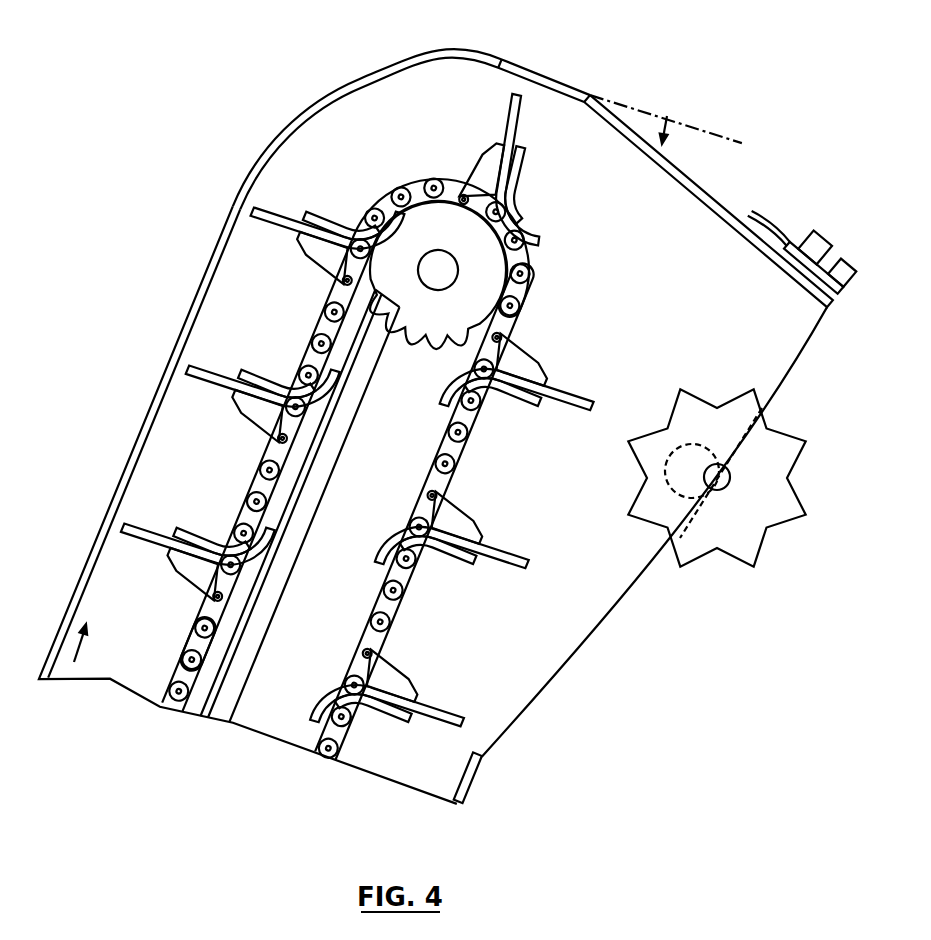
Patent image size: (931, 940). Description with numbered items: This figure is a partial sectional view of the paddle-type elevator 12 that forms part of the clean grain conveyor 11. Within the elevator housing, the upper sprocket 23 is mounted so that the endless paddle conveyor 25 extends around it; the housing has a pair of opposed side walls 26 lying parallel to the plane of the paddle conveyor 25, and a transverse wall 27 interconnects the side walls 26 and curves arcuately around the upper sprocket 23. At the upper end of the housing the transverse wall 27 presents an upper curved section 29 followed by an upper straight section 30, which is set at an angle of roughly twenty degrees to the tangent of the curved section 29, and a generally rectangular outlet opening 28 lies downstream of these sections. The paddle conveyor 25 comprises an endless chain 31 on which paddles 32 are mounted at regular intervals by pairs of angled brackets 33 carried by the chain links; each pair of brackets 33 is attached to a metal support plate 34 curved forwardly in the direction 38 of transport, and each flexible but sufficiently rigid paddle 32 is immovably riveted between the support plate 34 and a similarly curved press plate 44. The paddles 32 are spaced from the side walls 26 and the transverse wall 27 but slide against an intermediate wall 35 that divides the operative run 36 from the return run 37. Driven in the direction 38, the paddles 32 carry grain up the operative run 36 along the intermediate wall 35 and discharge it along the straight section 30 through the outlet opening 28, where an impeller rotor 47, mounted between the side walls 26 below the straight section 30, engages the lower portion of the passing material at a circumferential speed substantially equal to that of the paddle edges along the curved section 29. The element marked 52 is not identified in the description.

The clean grain conveyor 11 is at (212, 144).
The paddle-type elevator 12 is at (128, 457).
The upper sprocket 23 is at (433, 334).
The paddle conveyor 25 is at (550, 259).
The side walls 26 is at (301, 509).
The transverse wall 27 is at (170, 358).
The outlet opening 28 is at (815, 356).
The upper curved section 29 is at (360, 75).
The upper straight section 30 is at (729, 209).
The endless chain 31 is at (524, 298).
The paddle 32 is at (527, 119).
The angled brackets 33 is at (474, 172).
The support plate 34 is at (387, 392).
The intermediate wall 35 is at (291, 578).
The operative run 36 is at (190, 637).
The return run 37 is at (390, 646).
The direction of conveyor transport 38 is at (73, 653).
The press plate 44 is at (516, 178).
The impeller rotor 47 is at (697, 566).
The stop bracket 52 is at (821, 241).